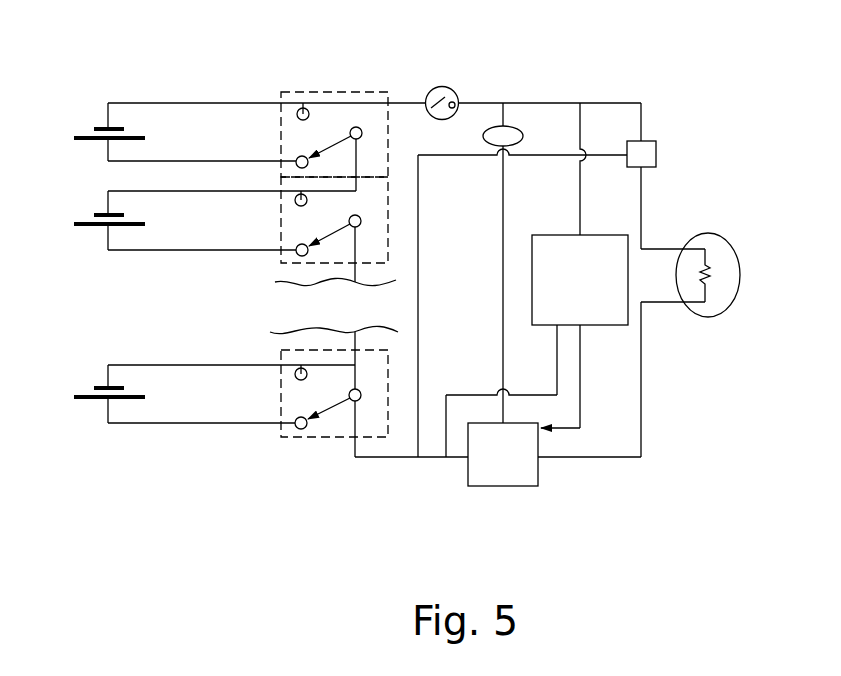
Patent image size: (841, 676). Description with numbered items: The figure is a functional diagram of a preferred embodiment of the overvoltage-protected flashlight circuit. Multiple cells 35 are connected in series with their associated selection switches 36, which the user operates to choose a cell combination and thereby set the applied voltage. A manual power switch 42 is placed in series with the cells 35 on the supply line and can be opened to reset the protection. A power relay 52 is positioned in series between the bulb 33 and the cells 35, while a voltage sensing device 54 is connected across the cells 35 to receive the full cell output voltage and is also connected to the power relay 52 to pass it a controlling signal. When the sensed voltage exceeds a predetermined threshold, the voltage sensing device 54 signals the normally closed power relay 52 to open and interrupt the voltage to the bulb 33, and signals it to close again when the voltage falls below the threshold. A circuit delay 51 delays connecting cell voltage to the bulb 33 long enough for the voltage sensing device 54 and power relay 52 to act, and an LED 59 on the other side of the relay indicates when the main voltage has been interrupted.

The cells 35 is at (93, 128).
The selection switches 36 is at (340, 90).
The manual power switch 42 is at (450, 87).
The LED 59 is at (508, 126).
The circuit delay 51 is at (656, 141).
The bulb 33 is at (715, 233).
The voltage sensing device 54 is at (613, 325).
The power relay 52 is at (538, 474).